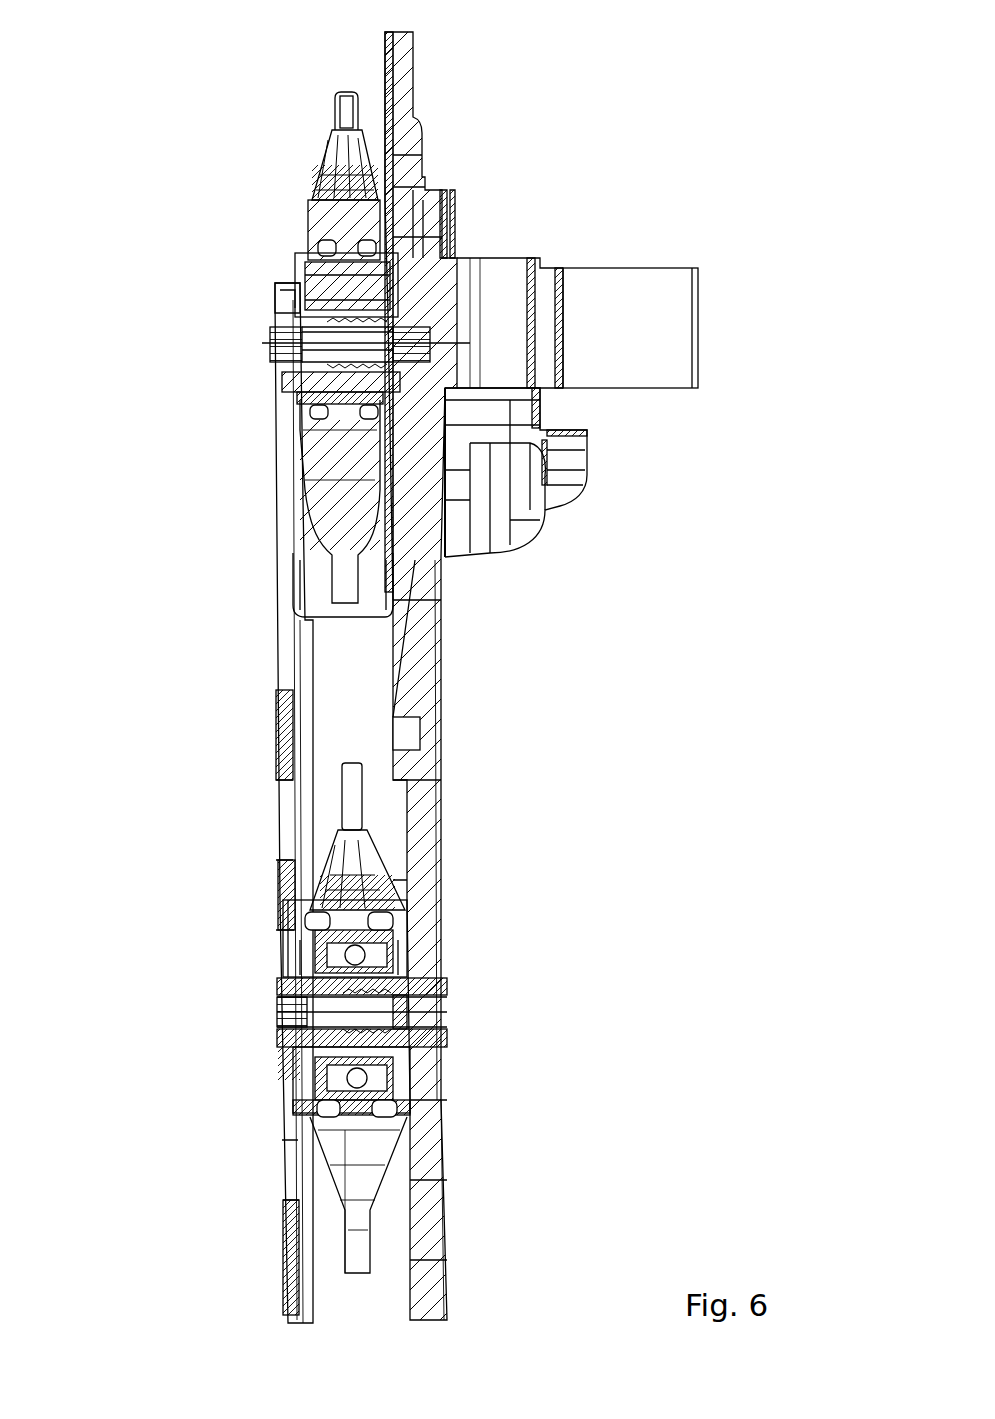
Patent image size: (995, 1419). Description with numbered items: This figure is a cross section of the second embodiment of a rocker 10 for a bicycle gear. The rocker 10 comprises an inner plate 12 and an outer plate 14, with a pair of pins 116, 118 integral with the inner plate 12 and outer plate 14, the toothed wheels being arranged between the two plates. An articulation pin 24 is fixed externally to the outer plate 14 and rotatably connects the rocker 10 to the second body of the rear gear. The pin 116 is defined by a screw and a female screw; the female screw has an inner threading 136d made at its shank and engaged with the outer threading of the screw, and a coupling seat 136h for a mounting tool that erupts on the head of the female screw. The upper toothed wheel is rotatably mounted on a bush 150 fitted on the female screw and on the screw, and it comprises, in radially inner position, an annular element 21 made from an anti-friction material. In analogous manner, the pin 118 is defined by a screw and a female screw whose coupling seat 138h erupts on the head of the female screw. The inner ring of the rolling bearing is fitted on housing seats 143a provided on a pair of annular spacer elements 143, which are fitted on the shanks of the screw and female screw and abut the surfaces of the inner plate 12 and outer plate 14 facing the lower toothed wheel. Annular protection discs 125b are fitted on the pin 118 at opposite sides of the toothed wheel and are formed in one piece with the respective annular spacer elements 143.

The rocker 10 is at (226, 136).
The inner plate 12 is at (265, 700).
The outer plate 14 is at (452, 772).
The annular element 21 is at (320, 220).
The articulation pin 24 is at (650, 343).
The pin 116 is at (280, 354).
The pin 118 is at (331, 1018).
The annular protection discs 125b is at (320, 1110).
The inner threading 136d is at (392, 435).
The coupling seat 136h is at (405, 330).
The coupling seat 138h is at (420, 1012).
The annular spacer elements 143 is at (368, 924).
The housing seats 143a is at (300, 965).
The bush 150 is at (300, 256).